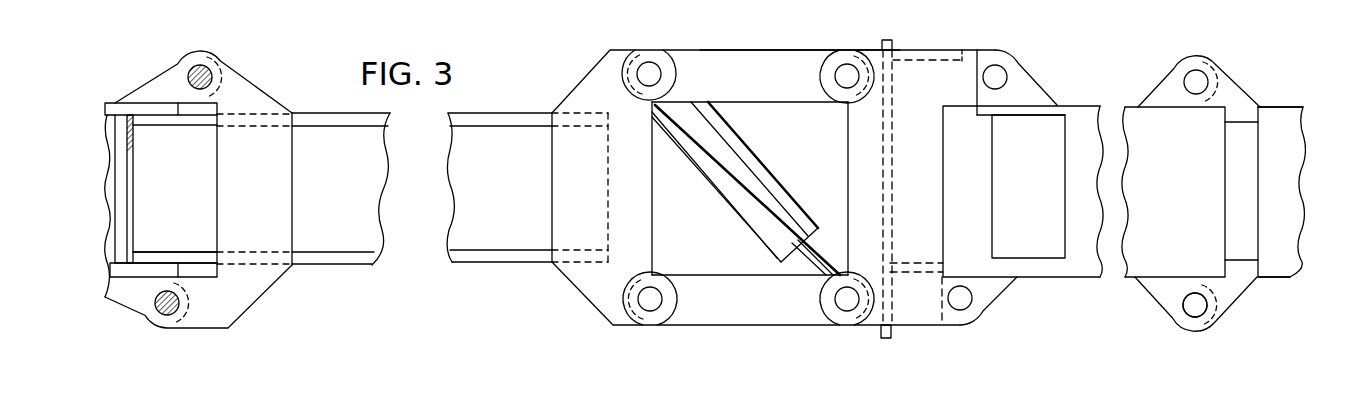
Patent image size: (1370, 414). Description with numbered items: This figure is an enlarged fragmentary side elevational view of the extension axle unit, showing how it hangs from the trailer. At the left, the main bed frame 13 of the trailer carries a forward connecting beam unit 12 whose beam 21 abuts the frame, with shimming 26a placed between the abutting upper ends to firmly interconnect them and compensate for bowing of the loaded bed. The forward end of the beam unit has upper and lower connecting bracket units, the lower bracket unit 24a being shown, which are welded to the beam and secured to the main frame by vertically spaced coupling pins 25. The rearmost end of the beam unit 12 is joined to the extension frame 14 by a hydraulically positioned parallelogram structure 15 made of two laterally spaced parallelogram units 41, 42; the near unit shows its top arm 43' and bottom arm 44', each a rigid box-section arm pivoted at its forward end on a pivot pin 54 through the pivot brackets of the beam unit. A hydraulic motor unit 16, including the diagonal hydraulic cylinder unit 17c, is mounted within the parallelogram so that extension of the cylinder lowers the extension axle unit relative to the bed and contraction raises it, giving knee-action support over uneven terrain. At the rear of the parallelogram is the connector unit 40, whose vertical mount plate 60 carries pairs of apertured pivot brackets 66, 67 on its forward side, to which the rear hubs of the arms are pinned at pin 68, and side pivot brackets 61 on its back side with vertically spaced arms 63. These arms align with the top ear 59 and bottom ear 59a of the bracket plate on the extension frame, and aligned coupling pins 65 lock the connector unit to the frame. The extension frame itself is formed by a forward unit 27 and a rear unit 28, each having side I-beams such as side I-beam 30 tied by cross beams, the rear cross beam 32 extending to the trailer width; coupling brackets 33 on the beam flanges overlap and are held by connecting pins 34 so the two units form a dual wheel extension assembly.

The connecting beam unit 12 is at (446, 264).
The main bed frame 13 is at (107, 210).
The extension frame 14 is at (1146, 297).
The parallelogram structure 15 is at (787, 331).
The hydraulic motor unit 16 is at (710, 196).
The hydraulic cylinder unit 17c is at (773, 192).
The beam 21 is at (522, 260).
The lower connecting bracket unit 24a is at (191, 262).
The coupling pins 25 is at (212, 70).
The shimming 26a is at (134, 137).
The forward unit 27 is at (1079, 106).
The rear unit 28 is at (1284, 104).
The side I-beam 30 is at (1090, 190).
The rear cross beam 32 is at (1178, 226).
The coupling brackets 33 is at (1230, 66).
The connecting pins 34 is at (1195, 306).
The connector unit 40 is at (931, 332).
The parallelogram unit 41 is at (1028, 407).
The second parallelogram unit 42 is at (784, 47).
The top arm 43' is at (755, 59).
The bottom arm 44' is at (755, 278).
The pivot pin 54 is at (648, 62).
The top ear 59 is at (1025, 88).
The bottom ear 59a is at (994, 302).
The vertical mount plate 60 is at (887, 201).
The side pivot brackets 61 is at (941, 58).
The arms 63 is at (1000, 103).
The coupling pins 65 is at (989, 85).
The pivot bracket 66 is at (864, 52).
The pivot bracket 67 is at (829, 291).
The pin 68 is at (849, 311).